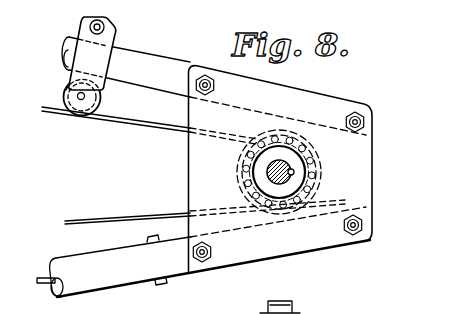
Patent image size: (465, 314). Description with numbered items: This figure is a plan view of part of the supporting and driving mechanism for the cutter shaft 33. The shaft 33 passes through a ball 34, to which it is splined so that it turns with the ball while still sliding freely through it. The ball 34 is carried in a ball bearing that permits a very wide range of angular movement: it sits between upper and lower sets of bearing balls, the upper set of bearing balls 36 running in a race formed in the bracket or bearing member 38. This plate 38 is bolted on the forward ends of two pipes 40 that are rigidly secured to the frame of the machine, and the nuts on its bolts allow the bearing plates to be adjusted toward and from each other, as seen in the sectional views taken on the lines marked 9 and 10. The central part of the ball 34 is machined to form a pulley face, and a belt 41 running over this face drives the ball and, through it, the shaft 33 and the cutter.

The section line 9- 9 is at (42, 278).
The section line 10- 10 is at (173, 170).
The shaft 33 is at (268, 174).
The ball 34 is at (305, 161).
The upper set of bearing balls 36 is at (293, 128).
The bracket or bearing member 38 is at (194, 186).
The pipes 40 is at (170, 66).
The belt 41 is at (129, 121).